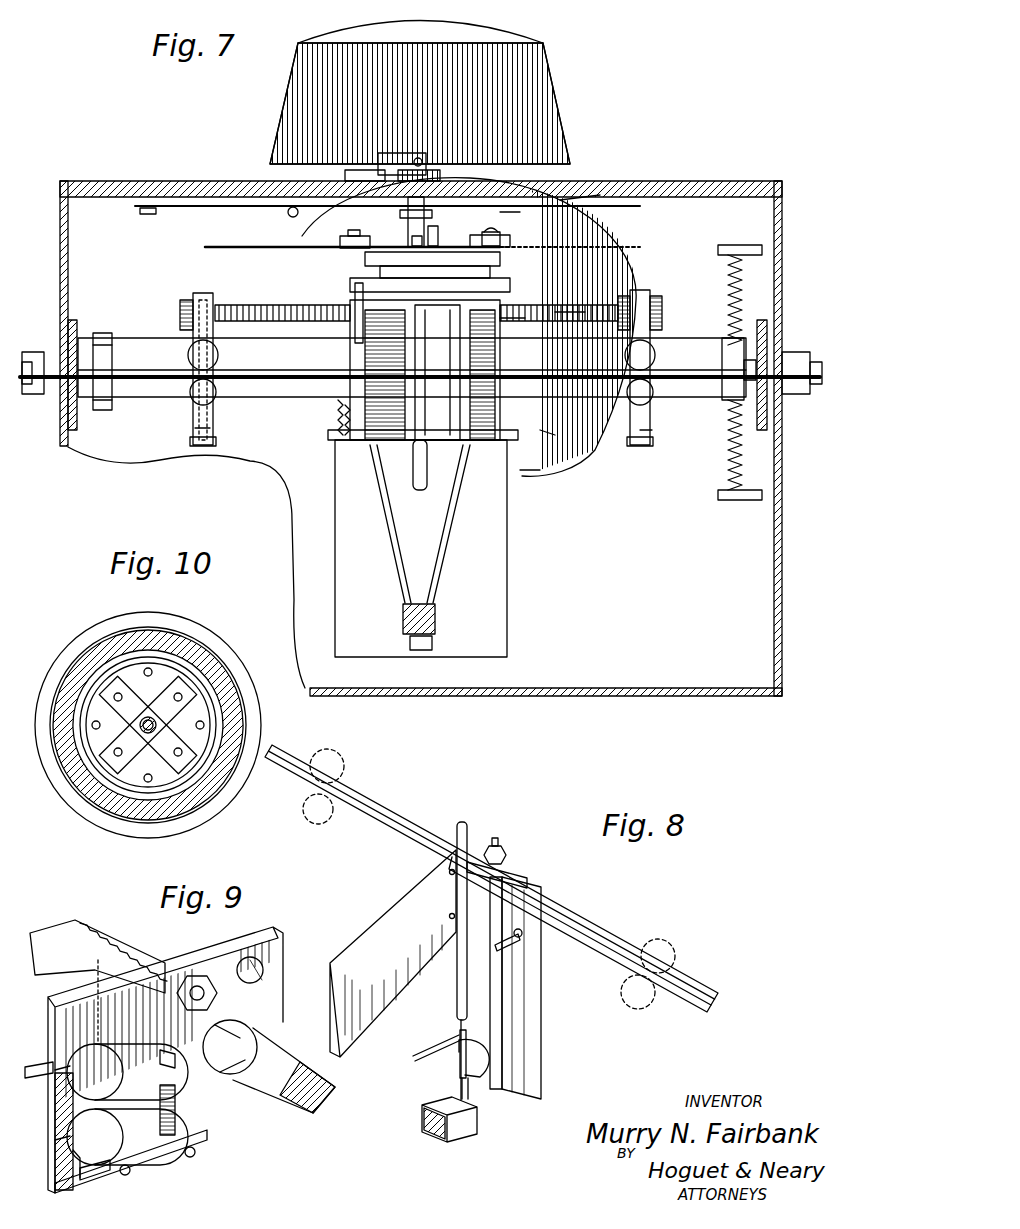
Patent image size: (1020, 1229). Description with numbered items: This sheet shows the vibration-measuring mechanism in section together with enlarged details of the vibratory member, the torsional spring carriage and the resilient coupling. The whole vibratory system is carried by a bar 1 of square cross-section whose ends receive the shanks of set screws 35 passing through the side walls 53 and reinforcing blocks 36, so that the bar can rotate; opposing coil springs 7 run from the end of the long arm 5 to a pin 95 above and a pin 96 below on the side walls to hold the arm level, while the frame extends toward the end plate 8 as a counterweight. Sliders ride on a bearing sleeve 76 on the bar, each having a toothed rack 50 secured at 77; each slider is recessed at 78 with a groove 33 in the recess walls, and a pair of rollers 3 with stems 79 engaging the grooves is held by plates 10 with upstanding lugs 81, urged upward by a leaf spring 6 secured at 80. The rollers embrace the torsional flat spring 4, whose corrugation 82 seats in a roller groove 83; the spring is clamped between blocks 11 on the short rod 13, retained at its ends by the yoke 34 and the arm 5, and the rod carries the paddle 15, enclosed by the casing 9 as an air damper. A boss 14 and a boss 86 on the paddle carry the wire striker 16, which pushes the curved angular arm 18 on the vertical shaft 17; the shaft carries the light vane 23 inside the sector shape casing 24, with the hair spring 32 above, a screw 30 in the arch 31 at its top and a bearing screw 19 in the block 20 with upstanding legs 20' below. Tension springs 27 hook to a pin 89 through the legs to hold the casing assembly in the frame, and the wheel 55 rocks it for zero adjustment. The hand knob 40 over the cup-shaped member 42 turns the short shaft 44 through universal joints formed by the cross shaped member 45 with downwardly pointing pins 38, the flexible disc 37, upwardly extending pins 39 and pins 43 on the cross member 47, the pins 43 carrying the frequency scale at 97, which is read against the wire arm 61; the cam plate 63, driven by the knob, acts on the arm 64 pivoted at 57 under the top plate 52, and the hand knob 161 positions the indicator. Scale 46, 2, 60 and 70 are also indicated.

In FIG. 7, the bar 1 is at (692, 340).
In FIG. 9, the bar 1 is at (318, 1108).
In FIG. 7, the roller carrier plate 2 is at (192, 425).
In FIG. 9, the roller carrier plate 2 is at (283, 944).
In FIG. 7, the rollers 3 is at (218, 368).
In FIG. 8, the rollers 3 is at (344, 768).
In FIG. 9, the rollers 3 is at (127, 1104).
In FIG. 7, the torsional flat spring 4 is at (270, 372).
In FIG. 8, the torsional flat spring 4 is at (384, 805).
In FIG. 9, the torsional flat spring 4 is at (45, 1064).
In FIG. 7, the long arm 5 is at (728, 338).
In FIG. 7, the leaf spring 6 is at (216, 444).
In FIG. 9, the leaf spring 6 is at (130, 1170).
In FIG. 7, the coil springs 7 is at (742, 280).
In FIG. 7, the end plate 8 is at (783, 228).
In FIG. 7, the casing 9 is at (495, 530).
In FIG. 9, the plates 10 is at (105, 1175).
In FIG. 8, the blocks 11 is at (520, 874).
In FIG. 8, the short rod 13 is at (500, 848).
In FIG. 8, the boss 14 is at (520, 950).
In FIG. 8, the paddle 15 is at (541, 1020).
In FIG. 8, the striker 16 is at (502, 986).
In FIG. 7, the vertical shaft 17 is at (350, 283).
In FIG. 8, the vertical shaft 17 is at (457, 992).
In FIG. 8, the angular arm 18 is at (490, 1052).
In FIG. 8, the bearing screw 19 is at (478, 1100).
In FIG. 7, the block 20 is at (478, 630).
In FIG. 8, the block 20 is at (469, 1127).
In FIG. 7, the upstanding legs 20' is at (460, 539).
In FIG. 7, the light vane 23 is at (555, 435).
In FIG. 8, the light vane 23 is at (393, 953).
In FIG. 7, the sector shape casing 24 is at (350, 350).
In FIG. 7, the tension springs 27 is at (340, 412).
In FIG. 7, the screw 30 is at (430, 262).
In FIG. 7, the arch 31 is at (360, 258).
In FIG. 7, the hair spring 32 is at (460, 260).
In FIG. 7, the groove 33 is at (195, 428).
In FIG. 9, the groove 33 is at (58, 1110).
In FIG. 7, the yoke 34 is at (104, 333).
In FIG. 7, the set screws 35 is at (32, 352).
In FIG. 7, the reinforcing blocks 36 is at (75, 320).
In FIG. 7, the flexible disc 37 is at (510, 285).
In FIG. 10, the flexible disc 37 is at (205, 700).
In FIG. 7, the downwardly pointing pins 38 is at (560, 318).
In FIG. 10, the downwardly pointing pins 38 is at (118, 697).
In FIG. 7, the upwardly extending pins 39 is at (500, 273).
In FIG. 10, the upwardly extending pins 39 is at (150, 670).
In FIG. 7, the hand knob 40 is at (545, 60).
In FIG. 10, the hand knob 40 is at (245, 650).
In FIG. 10, the cup-shaped member 42 is at (200, 660).
In FIG. 7, the pins 43 is at (600, 195).
In FIG. 10, the short shaft 44 is at (145, 782).
In FIG. 7, the cross shaped member 45 is at (500, 262).
In FIG. 10, the cross shaped member 45 is at (190, 775).
In FIG. 7, the scale 46 is at (585, 235).
In FIG. 7, the member 47 is at (520, 320).
In FIG. 7, the toothed rack 50 is at (262, 304).
In FIG. 9, the toothed rack 50 is at (105, 932).
In FIG. 7, the top plate 52 is at (142, 185).
In FIG. 7, the side walls 53 is at (62, 262).
In FIG. 7, the wheel 55 is at (540, 470).
In FIG. 7, the pivot 57 is at (145, 214).
In FIG. 7, the post 60 is at (412, 215).
In FIG. 7, the wire arm 61 is at (426, 222).
In FIG. 7, the cam plate 63 is at (520, 212).
In FIG. 7, the arm 64 is at (205, 208).
In FIG. 7, the bottom plate 70 is at (745, 690).
In FIG. 9, the bearing sleeve 76 is at (258, 1030).
In FIG. 7, the rack securing point 77 is at (192, 300).
In FIG. 9, the rack securing point 77 is at (207, 985).
In FIG. 9, the recess 78 is at (100, 1043).
In FIG. 9, the stems 79 is at (165, 1050).
In FIG. 9, the leaf spring securing point 80 is at (180, 1160).
In FIG. 9, the upstanding lugs 81 is at (165, 1122).
In FIG. 8, the corrugation 82 is at (565, 905).
In FIG. 9, the corrugation 82 is at (170, 1088).
In FIG. 9, the groove 83 is at (150, 1142).
In FIG. 8, the boss 86 is at (420, 1044).
In FIG. 7, the pin 89 is at (335, 437).
In FIG. 7, the pin 95 is at (740, 246).
In FIG. 7, the pin 96 is at (762, 502).
In FIG. 7, the frequency scale connection 97 is at (338, 212).
In FIG. 7, the hand knob 161 is at (395, 164).